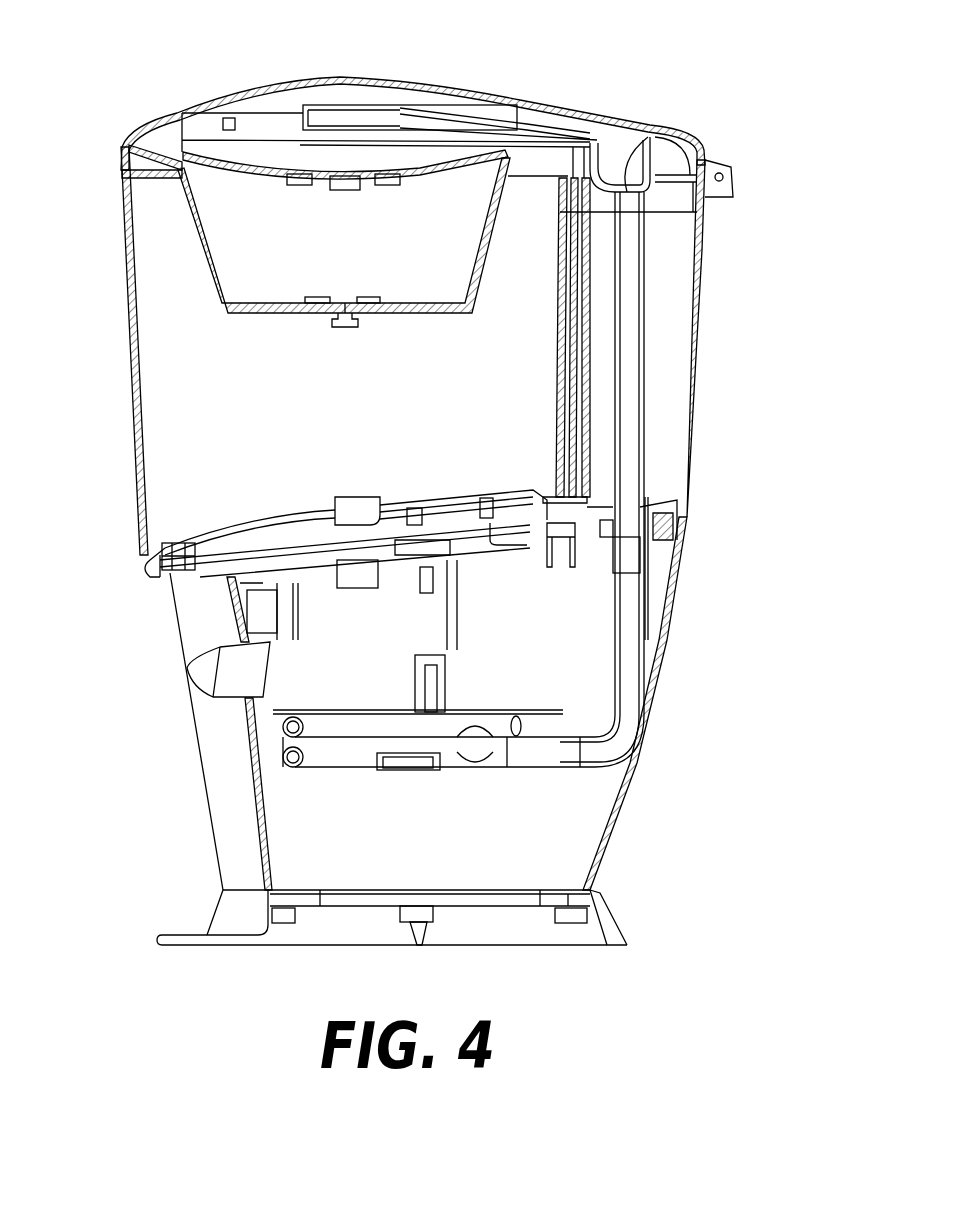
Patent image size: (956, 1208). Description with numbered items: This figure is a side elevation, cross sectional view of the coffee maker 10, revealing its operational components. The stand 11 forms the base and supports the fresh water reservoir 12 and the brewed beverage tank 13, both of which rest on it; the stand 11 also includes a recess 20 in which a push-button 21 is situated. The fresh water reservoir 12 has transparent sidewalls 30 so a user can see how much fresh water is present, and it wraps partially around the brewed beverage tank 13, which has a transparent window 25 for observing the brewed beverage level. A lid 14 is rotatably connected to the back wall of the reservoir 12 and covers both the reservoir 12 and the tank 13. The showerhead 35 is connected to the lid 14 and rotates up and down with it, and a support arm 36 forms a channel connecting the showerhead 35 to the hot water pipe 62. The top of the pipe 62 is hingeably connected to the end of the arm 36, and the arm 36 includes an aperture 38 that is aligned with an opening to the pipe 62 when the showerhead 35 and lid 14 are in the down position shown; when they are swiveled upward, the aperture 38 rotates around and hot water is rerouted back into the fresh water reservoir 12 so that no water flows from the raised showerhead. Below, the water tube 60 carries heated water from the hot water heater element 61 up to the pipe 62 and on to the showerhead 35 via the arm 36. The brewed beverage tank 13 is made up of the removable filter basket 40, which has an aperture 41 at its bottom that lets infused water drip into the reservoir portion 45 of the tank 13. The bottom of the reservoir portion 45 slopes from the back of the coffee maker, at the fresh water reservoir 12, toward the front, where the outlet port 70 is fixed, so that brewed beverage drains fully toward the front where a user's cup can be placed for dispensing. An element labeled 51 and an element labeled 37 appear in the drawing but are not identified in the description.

The coffee maker 10 is at (722, 527).
The stand 11 is at (640, 765).
The fresh water reservoir 12 is at (687, 418).
The brewed beverage tank 13 is at (197, 322).
The lid 14 is at (433, 88).
The recess 20 is at (254, 812).
The push-button 21 is at (257, 688).
The transparent window 25 is at (142, 412).
The transparent sidewalls 30 is at (703, 372).
The showerhead 35 is at (243, 140).
The support arm 36 is at (527, 130).
The insert 37 is at (378, 165).
The aperture 38 is at (647, 133).
The filter basket 40 is at (366, 265).
The aperture 41 is at (343, 328).
The reservoir portion 45 is at (297, 453).
The lever 51 is at (383, 545).
The water tube 60 is at (628, 663).
The hot water heater element 61 is at (357, 730).
The pipe 62 is at (640, 300).
The outlet port 70 is at (158, 572).